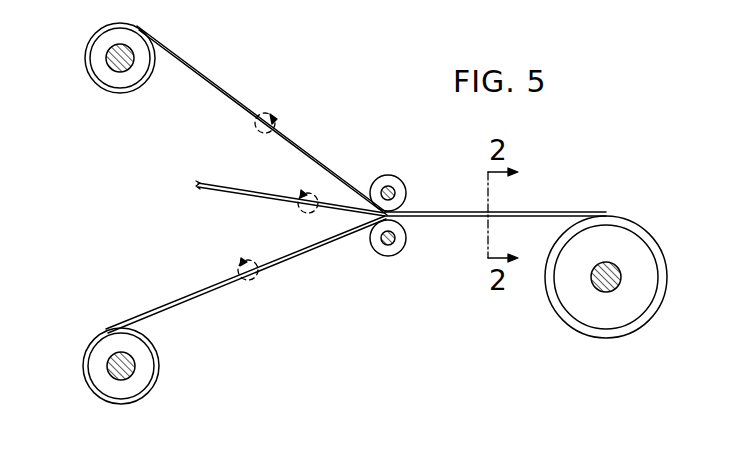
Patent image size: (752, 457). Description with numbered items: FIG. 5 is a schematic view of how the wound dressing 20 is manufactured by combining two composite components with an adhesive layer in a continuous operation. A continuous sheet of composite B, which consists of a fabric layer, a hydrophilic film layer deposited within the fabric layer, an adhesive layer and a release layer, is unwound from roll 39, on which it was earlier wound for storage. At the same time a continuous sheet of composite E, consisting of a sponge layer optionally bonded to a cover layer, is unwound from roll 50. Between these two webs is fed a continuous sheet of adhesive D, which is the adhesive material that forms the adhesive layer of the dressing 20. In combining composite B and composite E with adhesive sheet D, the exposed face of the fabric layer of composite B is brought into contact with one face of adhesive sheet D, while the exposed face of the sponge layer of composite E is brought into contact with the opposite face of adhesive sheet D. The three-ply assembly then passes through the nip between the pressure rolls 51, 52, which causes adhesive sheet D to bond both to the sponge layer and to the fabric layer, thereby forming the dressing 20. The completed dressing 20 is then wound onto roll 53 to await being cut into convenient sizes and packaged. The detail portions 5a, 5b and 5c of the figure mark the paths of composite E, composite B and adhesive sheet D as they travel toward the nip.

The roll 50 is at (112, 78).
The composite E is at (200, 70).
The section of FIG. 5 5a is at (279, 125).
The roll 39 is at (98, 368).
The composite B is at (163, 302).
The section of FIG. 5 5b is at (237, 261).
The adhesive sheet D is at (243, 200).
The section of FIG. 5 5c is at (297, 193).
The upper nip roller 51 is at (393, 177).
The pressure rolls 52 is at (400, 246).
The wound dressing 20 is at (529, 212).
The roll 53 is at (627, 270).